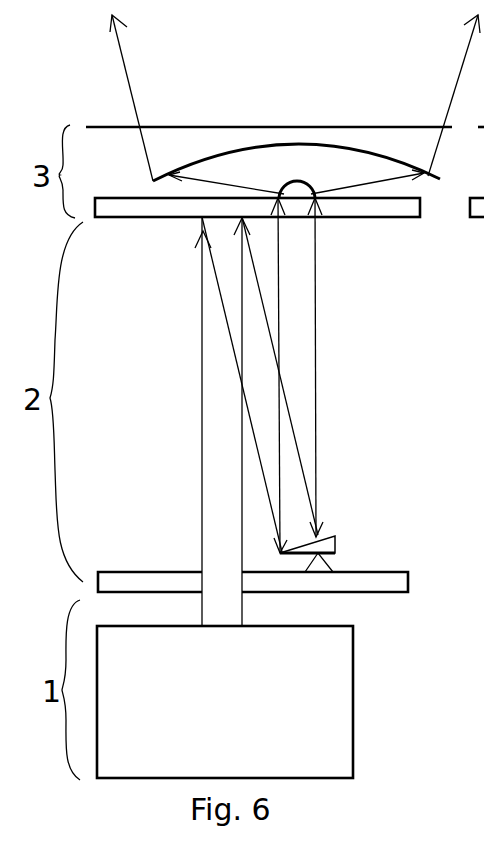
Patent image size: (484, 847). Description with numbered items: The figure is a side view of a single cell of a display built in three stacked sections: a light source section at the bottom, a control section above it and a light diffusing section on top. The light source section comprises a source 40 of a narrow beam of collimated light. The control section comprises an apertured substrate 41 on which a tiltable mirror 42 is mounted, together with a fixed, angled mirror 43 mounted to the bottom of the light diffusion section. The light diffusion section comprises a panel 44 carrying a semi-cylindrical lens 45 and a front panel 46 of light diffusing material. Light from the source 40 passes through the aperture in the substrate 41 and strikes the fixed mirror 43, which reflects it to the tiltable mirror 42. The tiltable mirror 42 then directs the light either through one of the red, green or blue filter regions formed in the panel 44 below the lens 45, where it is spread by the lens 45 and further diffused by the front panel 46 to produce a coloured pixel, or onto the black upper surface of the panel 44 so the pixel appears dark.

The source 40 is at (327, 721).
The apertured substrate 41 is at (382, 582).
The tiltable mirror 42 is at (337, 543).
The fixed, angled mirror 43 is at (206, 222).
The panel 44 is at (380, 212).
The semi-cylindrical lens 45 is at (292, 190).
The front panel 46 is at (397, 142).